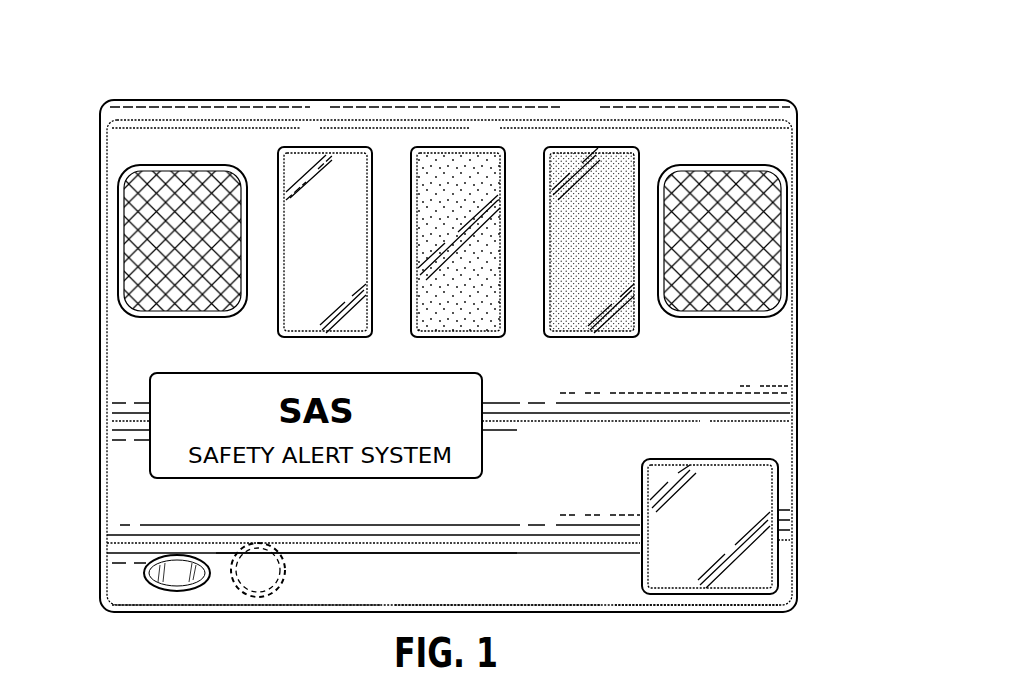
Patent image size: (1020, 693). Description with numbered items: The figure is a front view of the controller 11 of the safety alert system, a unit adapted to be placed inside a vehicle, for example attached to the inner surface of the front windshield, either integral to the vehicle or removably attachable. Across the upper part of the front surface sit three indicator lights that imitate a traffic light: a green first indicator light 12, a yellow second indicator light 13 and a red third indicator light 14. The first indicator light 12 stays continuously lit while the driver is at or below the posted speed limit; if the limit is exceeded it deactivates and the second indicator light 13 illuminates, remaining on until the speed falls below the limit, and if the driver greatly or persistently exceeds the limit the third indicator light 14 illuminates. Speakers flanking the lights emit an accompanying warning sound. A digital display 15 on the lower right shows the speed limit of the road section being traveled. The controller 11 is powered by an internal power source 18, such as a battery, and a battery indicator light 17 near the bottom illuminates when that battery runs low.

The controller 11 is at (825, 95).
The first indicator light 12 is at (318, 160).
The second indicator light 13 is at (448, 172).
The third indicator light 14 is at (570, 172).
The digital display 15 is at (750, 566).
The battery indicator light 17 is at (178, 575).
The power source 18 is at (262, 575).